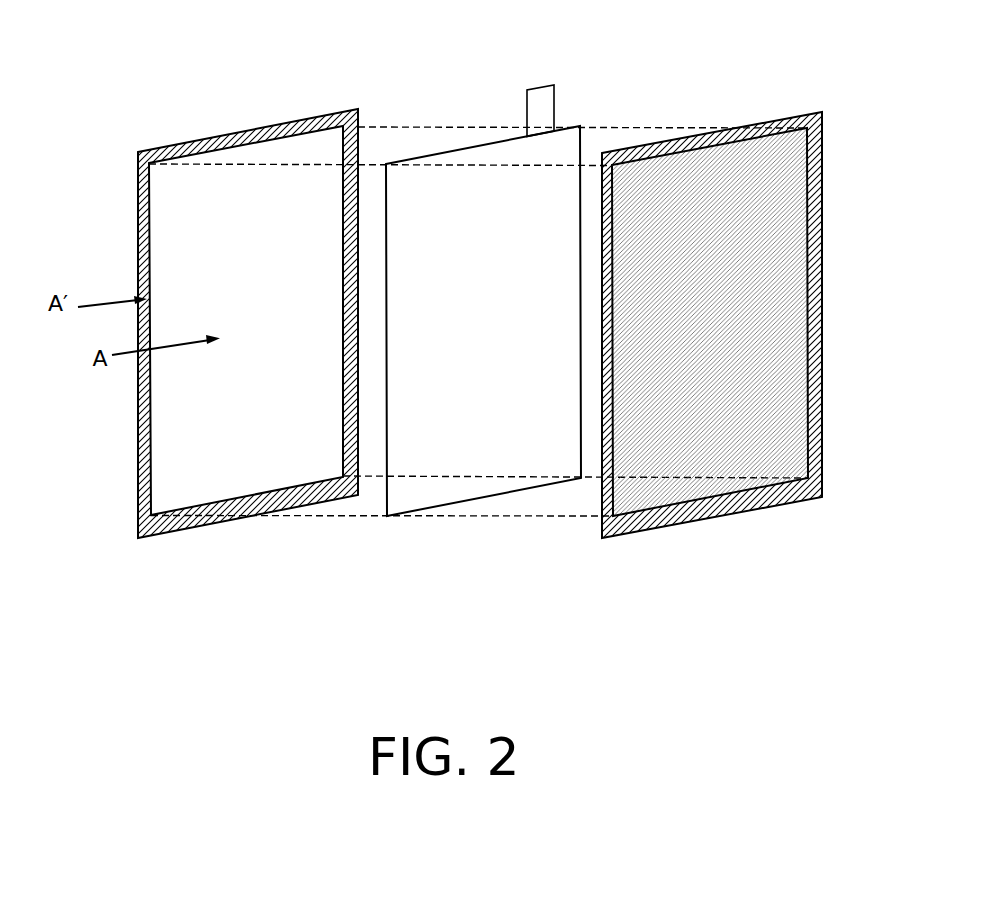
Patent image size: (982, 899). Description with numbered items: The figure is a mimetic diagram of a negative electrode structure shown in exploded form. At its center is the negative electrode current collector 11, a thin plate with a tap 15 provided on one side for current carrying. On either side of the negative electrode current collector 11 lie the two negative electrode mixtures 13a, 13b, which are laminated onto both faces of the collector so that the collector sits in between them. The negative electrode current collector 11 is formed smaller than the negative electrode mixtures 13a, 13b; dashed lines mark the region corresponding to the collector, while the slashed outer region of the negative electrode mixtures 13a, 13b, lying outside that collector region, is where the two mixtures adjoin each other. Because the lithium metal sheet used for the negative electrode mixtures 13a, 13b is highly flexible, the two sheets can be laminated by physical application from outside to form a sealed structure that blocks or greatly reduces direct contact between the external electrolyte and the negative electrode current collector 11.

The negative electrode current collector 11 is at (483, 500).
The negative electrode mixture 13a is at (217, 523).
The negative electrode mixture 13b is at (733, 515).
The tap 15 is at (553, 84).